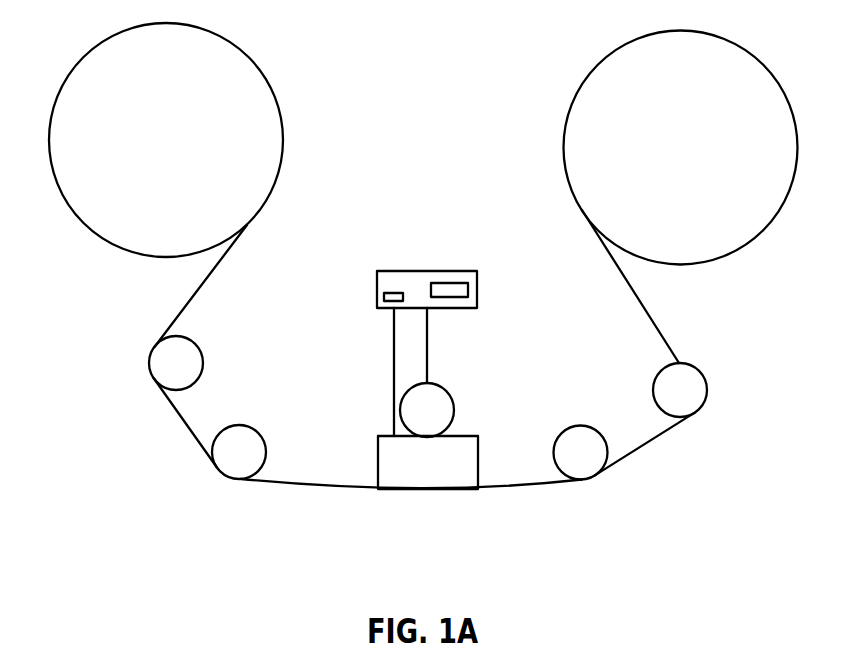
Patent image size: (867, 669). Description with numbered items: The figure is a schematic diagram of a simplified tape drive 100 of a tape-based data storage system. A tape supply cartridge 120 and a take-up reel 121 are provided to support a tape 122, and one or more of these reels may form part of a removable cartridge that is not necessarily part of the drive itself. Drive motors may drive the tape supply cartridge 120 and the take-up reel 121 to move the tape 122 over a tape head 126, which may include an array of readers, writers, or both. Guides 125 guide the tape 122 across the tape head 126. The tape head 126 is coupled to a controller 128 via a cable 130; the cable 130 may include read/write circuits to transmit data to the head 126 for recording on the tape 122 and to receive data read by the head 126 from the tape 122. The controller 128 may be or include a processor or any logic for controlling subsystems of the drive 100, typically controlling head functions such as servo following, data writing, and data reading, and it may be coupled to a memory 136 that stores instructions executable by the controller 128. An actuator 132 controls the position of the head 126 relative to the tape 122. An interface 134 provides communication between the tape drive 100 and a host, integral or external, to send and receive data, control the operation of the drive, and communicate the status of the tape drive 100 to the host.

The tape drive 100 is at (128, 300).
The tape supply cartridge 120 is at (282, 120).
The take-up reel 121 is at (755, 238).
The tape 122 is at (312, 487).
The guides 125 is at (238, 427).
The tape head 126 is at (478, 462).
The controller 128 is at (424, 271).
The cable 130 is at (397, 408).
The actuator 132 is at (446, 392).
The interface 134 is at (458, 283).
The memory 136 is at (392, 293).